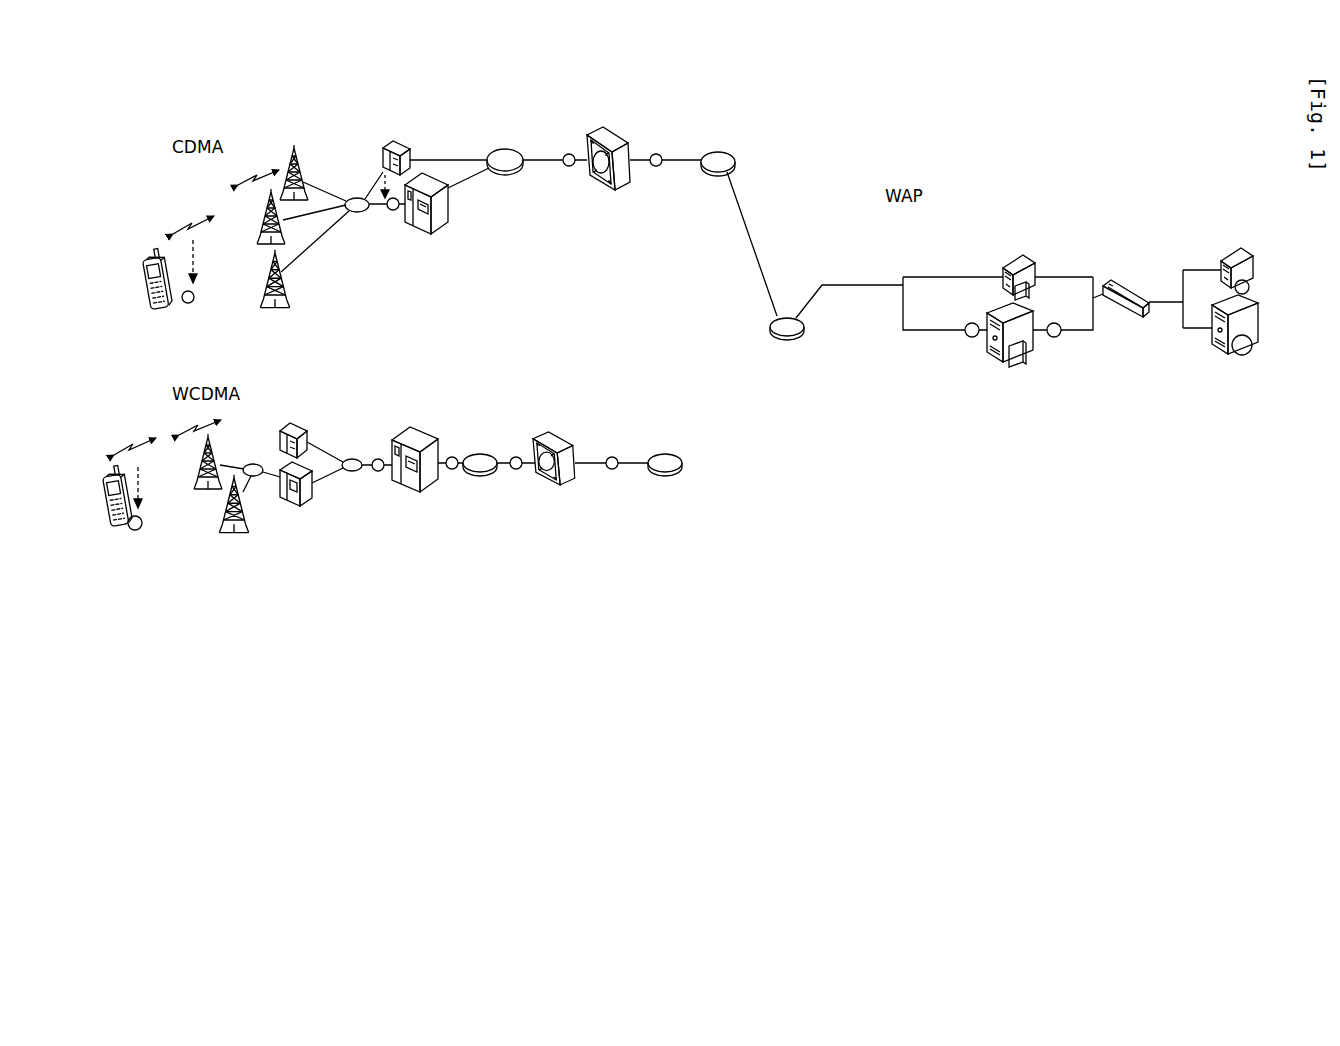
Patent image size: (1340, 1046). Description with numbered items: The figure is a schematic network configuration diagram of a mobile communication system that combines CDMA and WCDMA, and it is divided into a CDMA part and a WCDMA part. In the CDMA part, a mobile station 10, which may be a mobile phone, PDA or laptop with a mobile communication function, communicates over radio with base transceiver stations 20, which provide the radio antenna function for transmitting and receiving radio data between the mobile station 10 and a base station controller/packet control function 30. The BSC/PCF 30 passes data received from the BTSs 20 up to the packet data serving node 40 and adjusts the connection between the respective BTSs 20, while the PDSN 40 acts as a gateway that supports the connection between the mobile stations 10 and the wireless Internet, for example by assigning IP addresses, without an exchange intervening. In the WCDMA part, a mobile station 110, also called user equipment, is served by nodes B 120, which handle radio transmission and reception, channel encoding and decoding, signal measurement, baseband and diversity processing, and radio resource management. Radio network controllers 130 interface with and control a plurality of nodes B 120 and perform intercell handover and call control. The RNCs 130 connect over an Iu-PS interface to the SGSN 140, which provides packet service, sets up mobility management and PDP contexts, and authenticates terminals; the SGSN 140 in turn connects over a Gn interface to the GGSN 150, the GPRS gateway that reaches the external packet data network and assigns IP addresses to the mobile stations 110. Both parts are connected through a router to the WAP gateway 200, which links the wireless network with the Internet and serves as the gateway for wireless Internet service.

The mobile station 10 is at (150, 318).
The Base Transceiver Station (BTS) 20 is at (286, 290).
The Base Station Controller/Packet Control Function (BSC/PCF) 30 is at (410, 222).
The Packet Data Serving Node (PDSN) 40 is at (610, 134).
The mobile station 110 is at (100, 531).
The node B 120 is at (243, 528).
The Radio Network Controller (RNC) 130 is at (307, 504).
The SGSN 140 is at (430, 488).
The Gateway GPRS Support Node (GGSN) 150 is at (572, 483).
The Wireless Application Protocol (WAP) gateway 200 is at (992, 360).